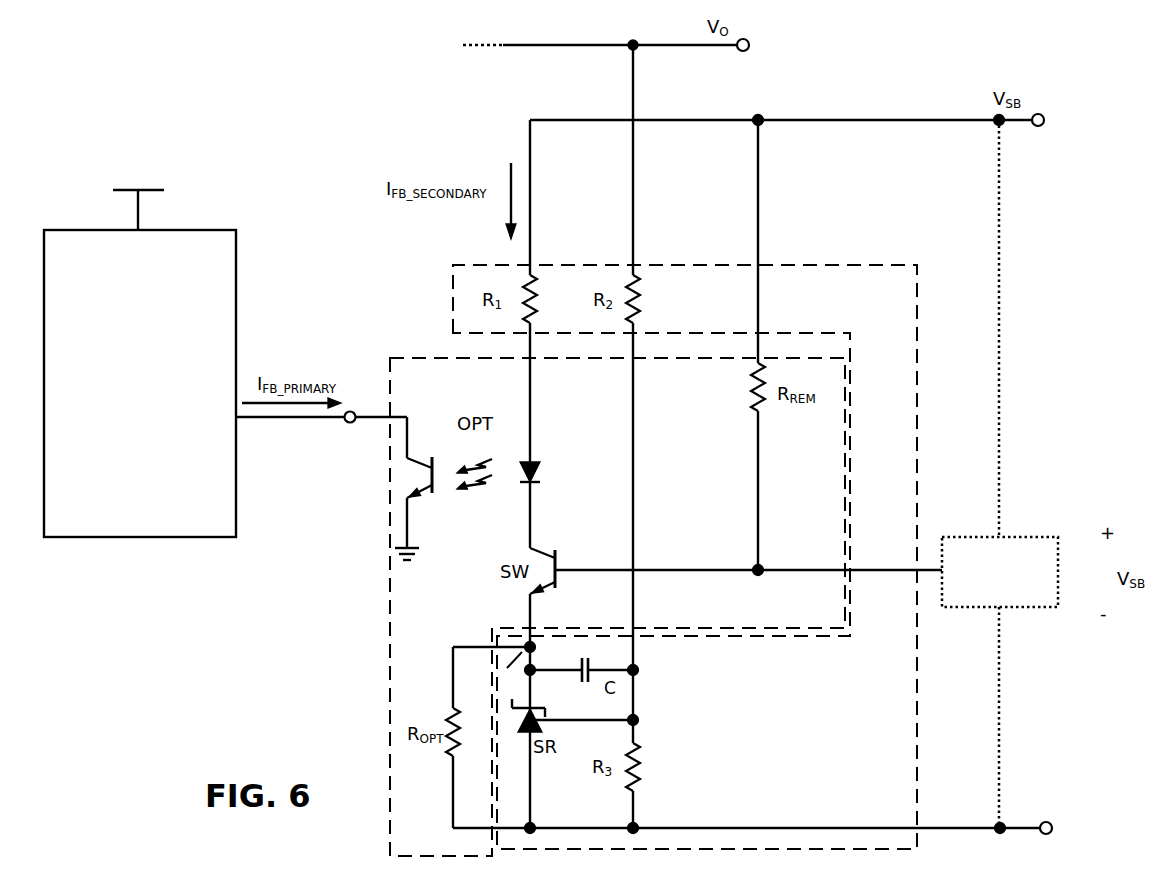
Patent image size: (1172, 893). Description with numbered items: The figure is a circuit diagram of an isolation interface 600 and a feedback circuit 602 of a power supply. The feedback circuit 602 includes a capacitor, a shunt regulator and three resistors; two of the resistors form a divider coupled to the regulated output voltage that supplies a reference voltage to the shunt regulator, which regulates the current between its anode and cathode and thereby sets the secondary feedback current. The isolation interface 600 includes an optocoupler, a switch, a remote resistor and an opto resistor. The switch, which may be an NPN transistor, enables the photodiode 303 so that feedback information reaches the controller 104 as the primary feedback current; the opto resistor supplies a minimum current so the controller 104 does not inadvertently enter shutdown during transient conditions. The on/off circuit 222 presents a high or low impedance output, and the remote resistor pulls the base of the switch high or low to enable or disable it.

The controller 104 is at (160, 346).
The isolation interface 600 is at (378, 655).
The feedback circuit 602 is at (848, 253).
The photodiode 303 is at (543, 492).
The on/off circuit 222 is at (1040, 613).